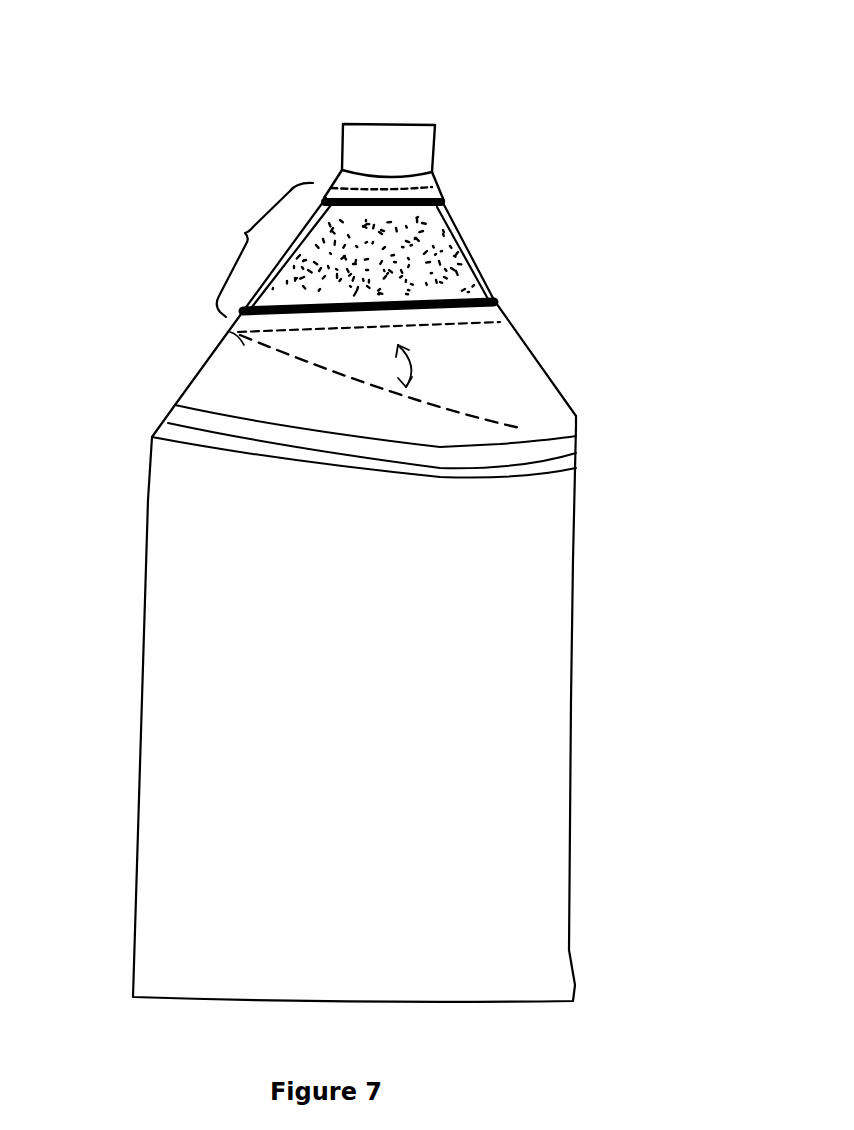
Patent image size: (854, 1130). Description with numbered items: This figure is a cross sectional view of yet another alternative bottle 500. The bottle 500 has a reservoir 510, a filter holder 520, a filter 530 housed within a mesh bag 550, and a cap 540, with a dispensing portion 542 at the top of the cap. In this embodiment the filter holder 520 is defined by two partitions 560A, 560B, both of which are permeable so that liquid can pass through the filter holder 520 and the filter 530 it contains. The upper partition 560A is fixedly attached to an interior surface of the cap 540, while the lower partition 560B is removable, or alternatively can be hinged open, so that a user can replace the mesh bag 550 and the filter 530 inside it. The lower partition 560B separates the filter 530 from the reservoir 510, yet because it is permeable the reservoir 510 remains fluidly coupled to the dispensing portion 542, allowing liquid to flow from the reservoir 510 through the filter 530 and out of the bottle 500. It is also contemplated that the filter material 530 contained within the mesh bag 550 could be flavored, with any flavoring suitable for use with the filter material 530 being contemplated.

The bottle 500 is at (535, 118).
The reservoir 510 is at (502, 833).
The filter holder 520 is at (246, 233).
The filter 530 is at (449, 248).
The cap 540 is at (518, 372).
The cap 542 is at (414, 142).
The mesh bag 550 is at (498, 293).
The partition 560A is at (332, 183).
The partition 560B is at (248, 347).